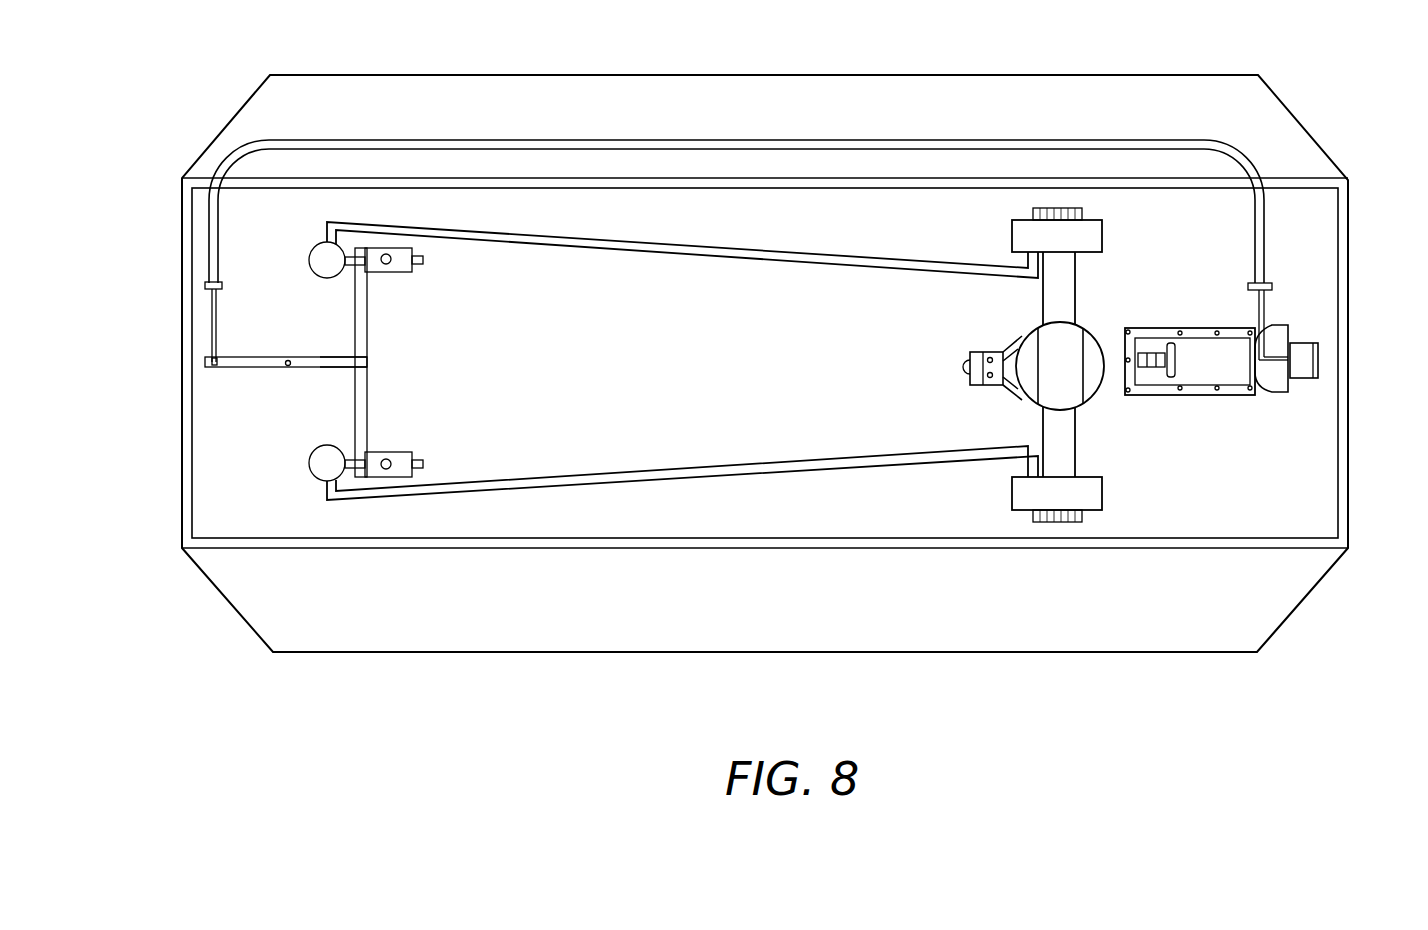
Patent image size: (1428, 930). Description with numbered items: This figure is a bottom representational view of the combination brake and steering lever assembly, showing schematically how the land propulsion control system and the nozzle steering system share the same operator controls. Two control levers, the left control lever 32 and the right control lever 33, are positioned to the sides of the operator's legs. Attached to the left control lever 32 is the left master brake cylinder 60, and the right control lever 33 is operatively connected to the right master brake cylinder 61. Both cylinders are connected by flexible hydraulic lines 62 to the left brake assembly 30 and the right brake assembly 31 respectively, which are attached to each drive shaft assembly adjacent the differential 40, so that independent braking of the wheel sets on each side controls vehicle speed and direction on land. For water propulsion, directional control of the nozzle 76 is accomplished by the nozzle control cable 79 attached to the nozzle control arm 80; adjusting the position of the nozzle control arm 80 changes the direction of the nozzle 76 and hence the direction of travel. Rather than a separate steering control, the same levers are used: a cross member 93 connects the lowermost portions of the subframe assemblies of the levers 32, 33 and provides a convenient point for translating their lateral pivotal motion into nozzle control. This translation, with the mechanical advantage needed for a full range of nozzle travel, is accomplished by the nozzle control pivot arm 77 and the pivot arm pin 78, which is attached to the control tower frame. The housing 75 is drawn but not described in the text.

The left brake assembly 30 is at (1104, 498).
The right brake assembly 31 is at (1110, 228).
The left control lever 32 is at (391, 451).
The right control lever 33 is at (389, 273).
The differential 40 is at (1085, 322).
The left master brake cylinder 60 is at (308, 460).
The right master brake cylinder 61 is at (305, 255).
The flexible hydraulic lines 62 is at (660, 256).
The control box 75 is at (1203, 368).
The nozzle 76 is at (1321, 360).
The nozzle control pivot arm 77 is at (328, 368).
The pivot arm pin 78 is at (282, 368).
The nozzle control cable 79 is at (208, 317).
The nozzle control arm 80 is at (1270, 368).
The cross member 93 is at (370, 383).